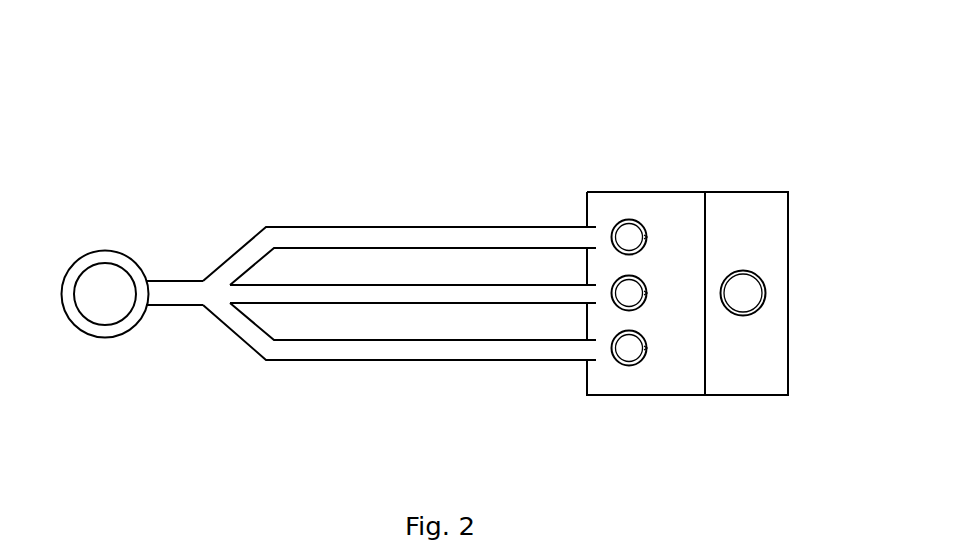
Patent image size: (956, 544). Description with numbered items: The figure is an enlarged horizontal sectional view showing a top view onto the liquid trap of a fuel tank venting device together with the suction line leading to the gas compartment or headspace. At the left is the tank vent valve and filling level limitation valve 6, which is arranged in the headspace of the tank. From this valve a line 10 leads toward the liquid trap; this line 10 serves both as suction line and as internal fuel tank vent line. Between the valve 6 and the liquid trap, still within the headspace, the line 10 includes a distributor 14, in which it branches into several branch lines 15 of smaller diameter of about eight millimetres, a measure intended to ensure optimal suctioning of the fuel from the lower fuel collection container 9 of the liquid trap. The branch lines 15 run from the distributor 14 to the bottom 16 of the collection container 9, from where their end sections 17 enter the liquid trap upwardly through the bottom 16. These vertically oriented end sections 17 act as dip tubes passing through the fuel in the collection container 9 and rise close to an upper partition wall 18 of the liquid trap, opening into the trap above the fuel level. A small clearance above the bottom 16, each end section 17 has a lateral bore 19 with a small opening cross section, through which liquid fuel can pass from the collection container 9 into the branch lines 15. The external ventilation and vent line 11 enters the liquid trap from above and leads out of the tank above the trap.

The tank vent valve and filling level limitation valve 6 is at (105, 255).
The lower fuel collection container 9 is at (671, 330).
The line 10 is at (173, 307).
The external ventilation and vent line 11 is at (766, 293).
The distributor 14 is at (175, 285).
The branch lines 15 is at (375, 240).
The bottom 16 is at (670, 210).
The end sections 17 is at (629, 220).
The upper partition wall 18 is at (751, 250).
The lateral bore 19 is at (647, 237).